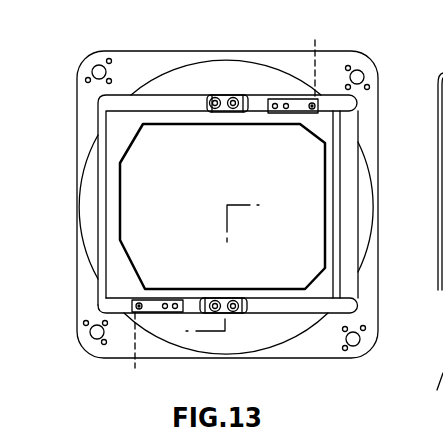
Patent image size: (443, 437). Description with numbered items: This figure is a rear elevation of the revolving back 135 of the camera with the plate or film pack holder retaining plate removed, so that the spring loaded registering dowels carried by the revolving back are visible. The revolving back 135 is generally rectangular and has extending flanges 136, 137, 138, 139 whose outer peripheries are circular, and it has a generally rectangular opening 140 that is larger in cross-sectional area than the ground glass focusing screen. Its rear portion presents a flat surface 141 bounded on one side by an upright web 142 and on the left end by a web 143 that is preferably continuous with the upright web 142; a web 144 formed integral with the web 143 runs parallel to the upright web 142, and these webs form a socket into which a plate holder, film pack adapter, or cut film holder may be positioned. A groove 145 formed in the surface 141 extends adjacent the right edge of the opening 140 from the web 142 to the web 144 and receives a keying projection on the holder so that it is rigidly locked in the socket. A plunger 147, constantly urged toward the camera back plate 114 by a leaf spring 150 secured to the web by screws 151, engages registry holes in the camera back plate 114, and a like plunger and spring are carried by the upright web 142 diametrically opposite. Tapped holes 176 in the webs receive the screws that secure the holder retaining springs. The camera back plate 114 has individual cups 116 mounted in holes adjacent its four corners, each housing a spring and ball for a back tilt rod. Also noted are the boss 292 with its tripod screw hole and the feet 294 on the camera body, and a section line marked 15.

The camera back plate 114 is at (372, 280).
The cups 116 is at (96, 64).
The revolving back 135 is at (364, 123).
The flange 136 is at (364, 184).
The flange 137 is at (250, 69).
The flange 138 is at (87, 191).
The flange 139 is at (265, 338).
The opening 140 is at (328, 178).
The flat surface 141 is at (347, 258).
The upright web 142 is at (338, 62).
The web 143 is at (100, 126).
The web 144 is at (302, 308).
The groove 145 is at (333, 212).
The plunger 147 is at (234, 209).
The leaf spring 150 is at (288, 115).
The screws 151 is at (274, 114).
The tapped holes 176 is at (217, 113).
The section line 15- 15 is at (351, 207).
The boss 292 is at (297, 0).
The feet 294 is at (241, 0).